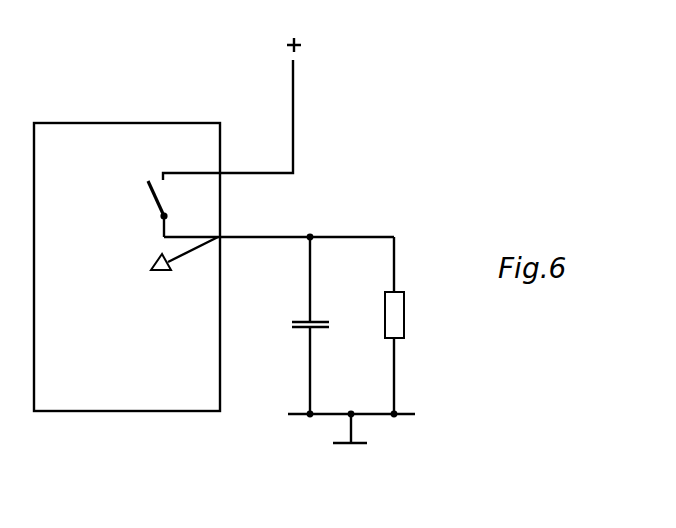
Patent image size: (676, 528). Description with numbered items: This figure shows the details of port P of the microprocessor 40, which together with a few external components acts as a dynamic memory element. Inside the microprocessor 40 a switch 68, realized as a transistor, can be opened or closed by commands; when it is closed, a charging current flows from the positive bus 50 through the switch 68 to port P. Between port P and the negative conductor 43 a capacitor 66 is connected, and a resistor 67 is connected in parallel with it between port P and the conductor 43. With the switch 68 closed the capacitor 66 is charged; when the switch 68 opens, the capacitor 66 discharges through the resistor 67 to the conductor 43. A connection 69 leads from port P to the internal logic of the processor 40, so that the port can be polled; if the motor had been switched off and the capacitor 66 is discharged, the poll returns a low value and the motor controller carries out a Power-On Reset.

The microprocessor 40 is at (110, 136).
The positive bus 50 is at (294, 90).
The switch (transistor) 68 is at (154, 202).
The connection 69 is at (188, 259).
The port P is at (240, 236).
The capacitor 66 is at (300, 320).
The resistor 67 is at (385, 310).
The negative conductor 43 is at (364, 413).